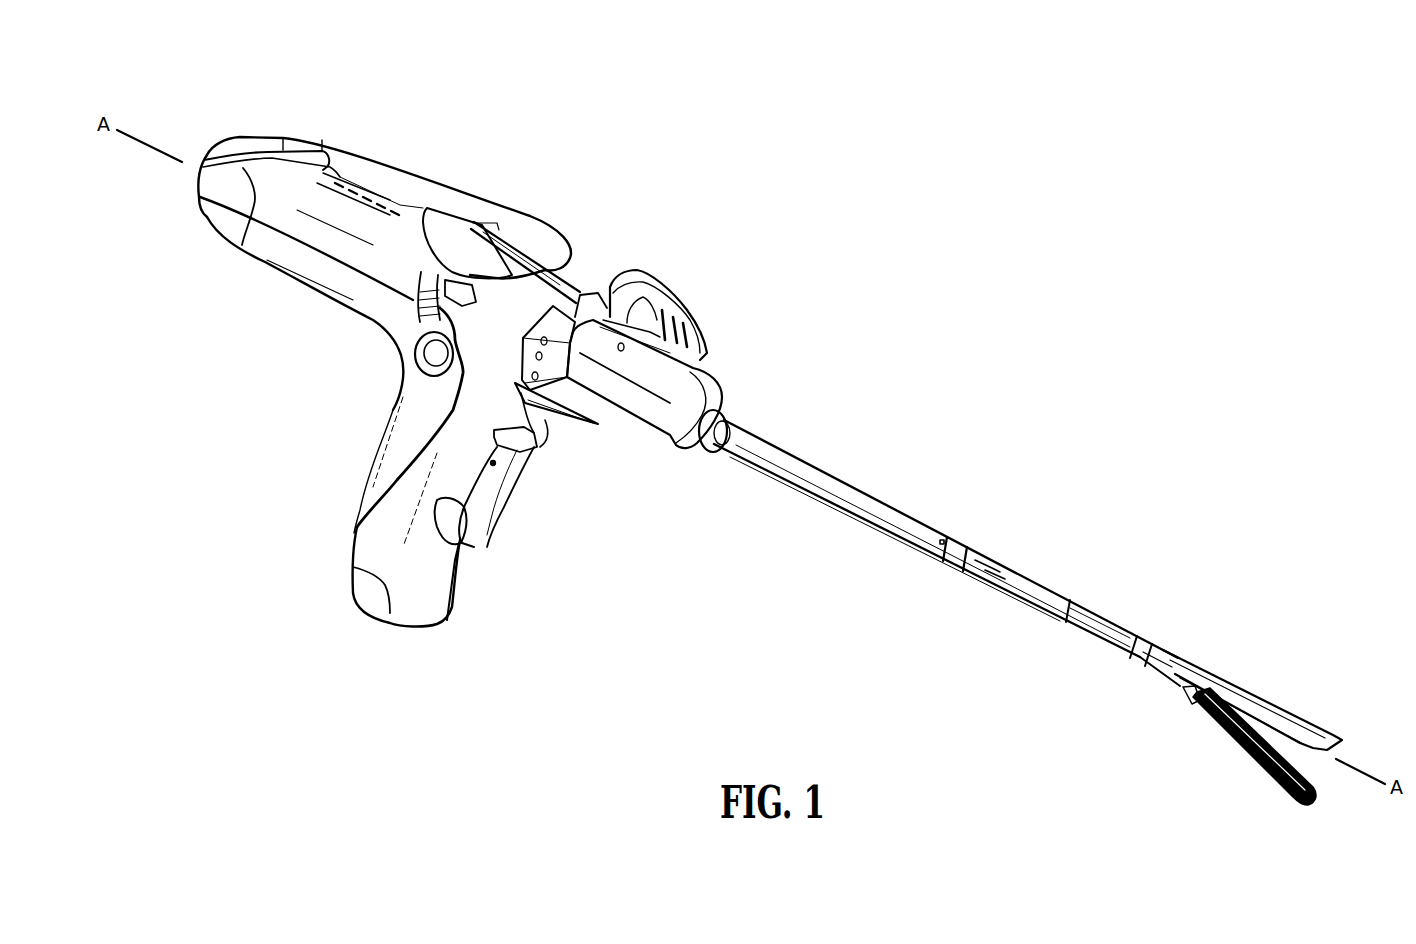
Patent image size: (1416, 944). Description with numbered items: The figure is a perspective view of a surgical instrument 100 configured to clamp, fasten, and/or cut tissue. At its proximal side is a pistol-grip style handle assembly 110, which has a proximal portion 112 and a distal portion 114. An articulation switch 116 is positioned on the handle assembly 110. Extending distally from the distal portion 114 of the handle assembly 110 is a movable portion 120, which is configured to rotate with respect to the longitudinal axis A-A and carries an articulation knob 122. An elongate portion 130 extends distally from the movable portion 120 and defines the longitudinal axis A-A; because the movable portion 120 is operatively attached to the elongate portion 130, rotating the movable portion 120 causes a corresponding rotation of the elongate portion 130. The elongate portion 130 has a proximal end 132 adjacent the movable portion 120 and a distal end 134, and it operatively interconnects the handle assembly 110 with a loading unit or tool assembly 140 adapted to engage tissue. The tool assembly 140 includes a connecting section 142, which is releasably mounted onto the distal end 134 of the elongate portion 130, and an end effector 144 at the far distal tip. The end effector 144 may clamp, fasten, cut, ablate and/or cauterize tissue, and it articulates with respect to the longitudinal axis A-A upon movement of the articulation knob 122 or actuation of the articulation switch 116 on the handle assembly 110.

The surgical instrument 100 is at (948, 199).
The handle assembly 110 is at (512, 147).
The proximal portion 112 is at (213, 137).
The distal portion 114 is at (581, 284).
The articulation switch 116 is at (375, 320).
The movable portion 120 is at (722, 271).
The articulation knob 122 is at (687, 322).
The elongate portion 130 is at (903, 457).
The proximal end 132 is at (750, 428).
The distal end 134 is at (1000, 522).
The tool assembly 140 is at (1162, 548).
The connecting section 142 is at (1076, 584).
The end effector 144 is at (1265, 678).